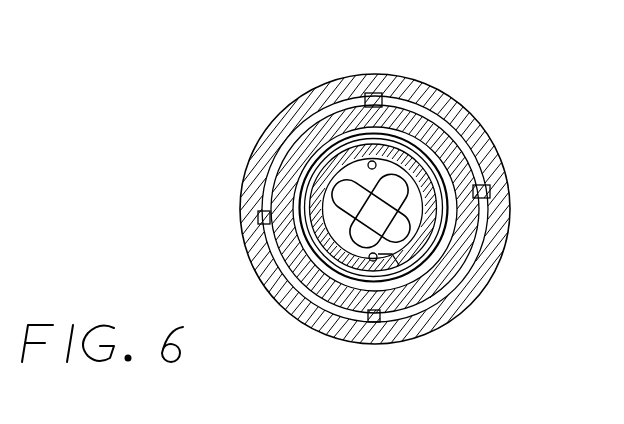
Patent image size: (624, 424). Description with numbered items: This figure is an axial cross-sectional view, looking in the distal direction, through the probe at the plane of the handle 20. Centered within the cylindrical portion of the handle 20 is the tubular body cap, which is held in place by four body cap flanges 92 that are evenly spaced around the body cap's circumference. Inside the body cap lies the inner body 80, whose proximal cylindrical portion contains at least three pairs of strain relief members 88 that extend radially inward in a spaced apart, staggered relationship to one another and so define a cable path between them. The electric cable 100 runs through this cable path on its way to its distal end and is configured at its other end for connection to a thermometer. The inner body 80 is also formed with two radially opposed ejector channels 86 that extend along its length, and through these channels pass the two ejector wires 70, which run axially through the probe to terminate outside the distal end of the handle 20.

The handle 20 is at (281, 105).
The body cap flanges 92 is at (489, 196).
The strain relief members 88 is at (324, 206).
The inner body 80 is at (400, 193).
The ejector wires 70 is at (372, 161).
The ejector channels 86 is at (380, 259).
The electric cable 100 is at (400, 257).